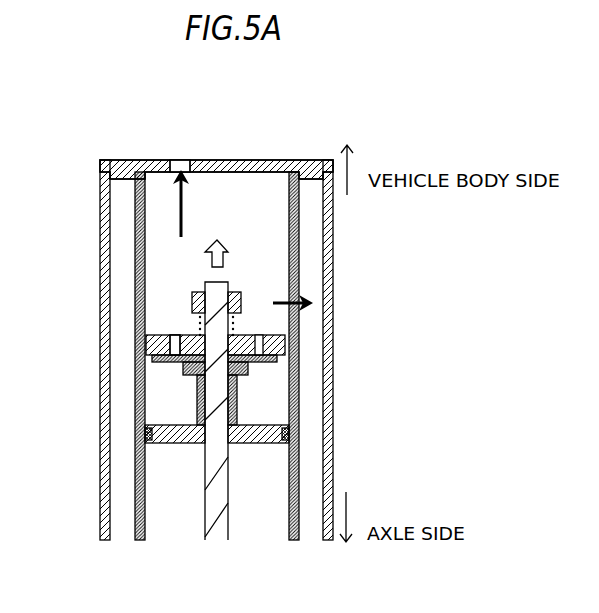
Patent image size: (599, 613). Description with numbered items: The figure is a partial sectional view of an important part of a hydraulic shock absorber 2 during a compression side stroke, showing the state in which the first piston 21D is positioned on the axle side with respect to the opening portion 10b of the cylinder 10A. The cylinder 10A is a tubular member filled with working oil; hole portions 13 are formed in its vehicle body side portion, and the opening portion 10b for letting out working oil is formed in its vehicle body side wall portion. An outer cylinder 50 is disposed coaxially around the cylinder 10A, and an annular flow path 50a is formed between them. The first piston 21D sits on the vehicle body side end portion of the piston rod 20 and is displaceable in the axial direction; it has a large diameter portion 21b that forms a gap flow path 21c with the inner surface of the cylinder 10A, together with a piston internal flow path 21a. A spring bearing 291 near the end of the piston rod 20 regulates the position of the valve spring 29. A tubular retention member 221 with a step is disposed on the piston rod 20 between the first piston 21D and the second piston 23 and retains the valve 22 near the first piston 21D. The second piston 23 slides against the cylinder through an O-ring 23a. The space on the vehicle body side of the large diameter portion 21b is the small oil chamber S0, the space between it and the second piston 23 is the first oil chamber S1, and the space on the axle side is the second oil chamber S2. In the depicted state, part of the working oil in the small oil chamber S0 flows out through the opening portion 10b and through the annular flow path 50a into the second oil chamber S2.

The hydraulic shock absorber 2 is at (289, 149).
The hole portions 13 is at (243, 161).
The cylinder 10A is at (136, 238).
The opening portion 10b is at (310, 300).
The piston rod 20 is at (222, 525).
The piston internal flow path 21a is at (249, 370).
The large diameter portion 21b is at (262, 348).
The gap flow path 21c is at (270, 356).
The first piston 21D is at (147, 348).
The valve 22 is at (172, 362).
The retention member 221 is at (238, 398).
The second piston 23 is at (157, 443).
The O-ring 23a is at (290, 437).
The valve spring 29 is at (238, 323).
The spring bearing 291 is at (233, 292).
The outer cylinder 50 is at (103, 468).
The annular flow path 50a is at (123, 498).
The small oil chamber S0 is at (162, 282).
The first oil chamber S1 is at (165, 403).
The second oil chamber S2 is at (173, 523).